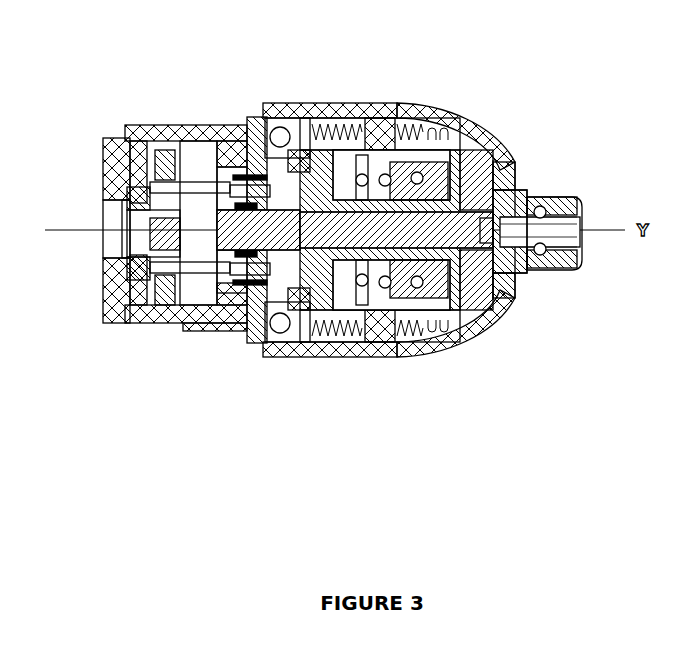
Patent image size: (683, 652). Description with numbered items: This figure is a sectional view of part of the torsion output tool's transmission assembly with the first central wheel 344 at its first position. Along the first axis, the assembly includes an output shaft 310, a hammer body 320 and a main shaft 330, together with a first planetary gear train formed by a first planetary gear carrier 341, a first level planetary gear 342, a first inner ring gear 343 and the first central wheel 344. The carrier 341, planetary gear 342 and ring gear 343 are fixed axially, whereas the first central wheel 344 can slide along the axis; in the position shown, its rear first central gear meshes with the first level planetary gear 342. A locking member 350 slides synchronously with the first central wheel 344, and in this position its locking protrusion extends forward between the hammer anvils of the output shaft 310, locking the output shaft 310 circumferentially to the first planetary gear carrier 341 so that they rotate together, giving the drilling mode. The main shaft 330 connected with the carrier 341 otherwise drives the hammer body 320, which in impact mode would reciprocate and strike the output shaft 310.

The output shaft 310 is at (483, 215).
The hammer body 320 is at (432, 183).
The main shaft 330 is at (412, 247).
The first planetary gear carrier 341 is at (283, 267).
The first level planetary gear 342 is at (247, 270).
The first inner ring gear 343 is at (262, 168).
The first central wheel 344 is at (227, 227).
The locking member 350 is at (383, 152).